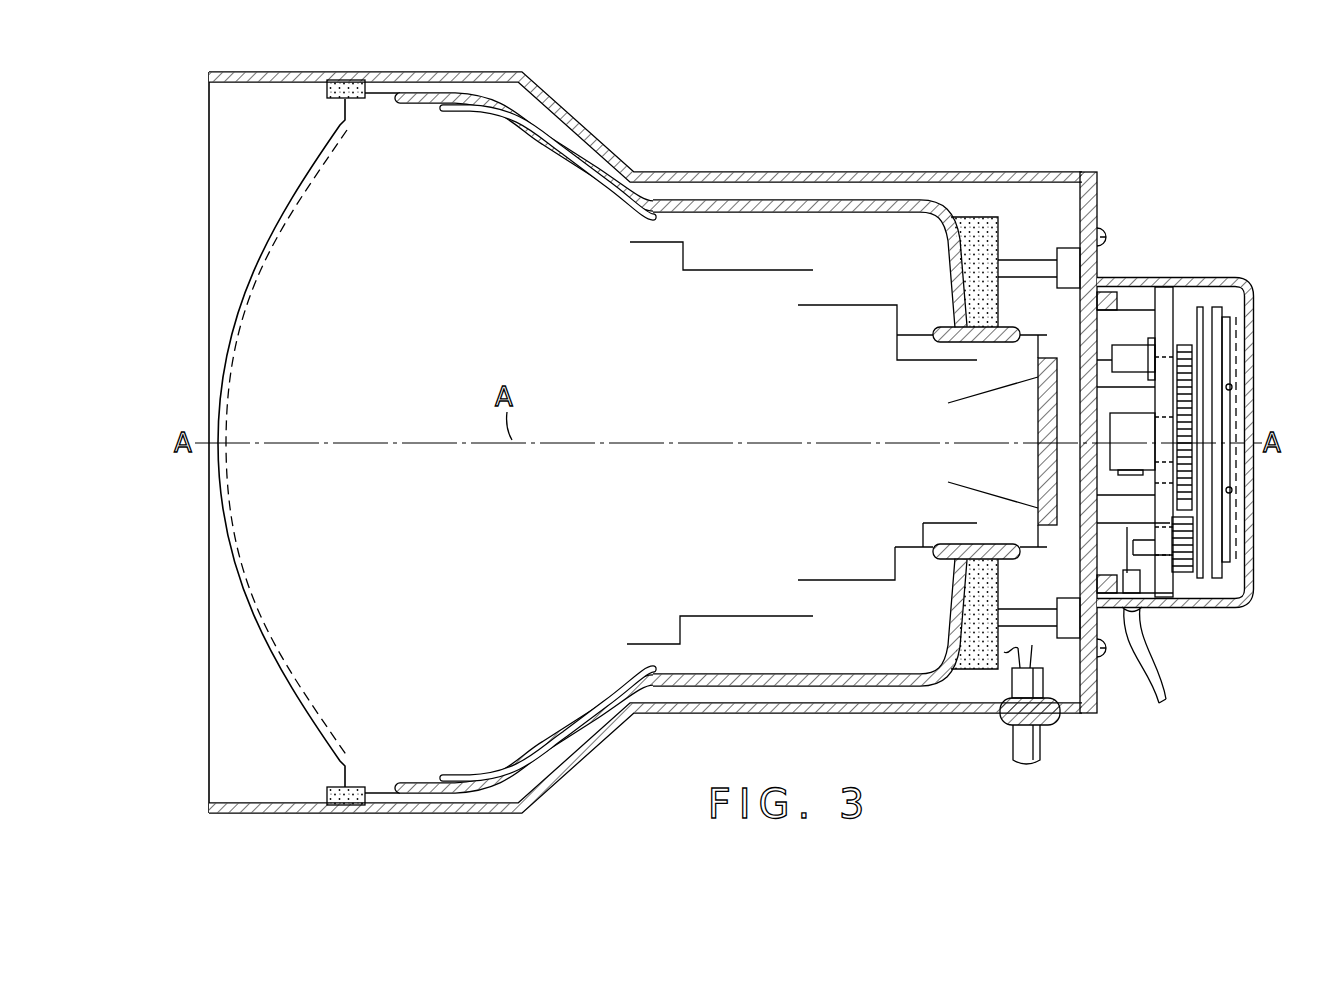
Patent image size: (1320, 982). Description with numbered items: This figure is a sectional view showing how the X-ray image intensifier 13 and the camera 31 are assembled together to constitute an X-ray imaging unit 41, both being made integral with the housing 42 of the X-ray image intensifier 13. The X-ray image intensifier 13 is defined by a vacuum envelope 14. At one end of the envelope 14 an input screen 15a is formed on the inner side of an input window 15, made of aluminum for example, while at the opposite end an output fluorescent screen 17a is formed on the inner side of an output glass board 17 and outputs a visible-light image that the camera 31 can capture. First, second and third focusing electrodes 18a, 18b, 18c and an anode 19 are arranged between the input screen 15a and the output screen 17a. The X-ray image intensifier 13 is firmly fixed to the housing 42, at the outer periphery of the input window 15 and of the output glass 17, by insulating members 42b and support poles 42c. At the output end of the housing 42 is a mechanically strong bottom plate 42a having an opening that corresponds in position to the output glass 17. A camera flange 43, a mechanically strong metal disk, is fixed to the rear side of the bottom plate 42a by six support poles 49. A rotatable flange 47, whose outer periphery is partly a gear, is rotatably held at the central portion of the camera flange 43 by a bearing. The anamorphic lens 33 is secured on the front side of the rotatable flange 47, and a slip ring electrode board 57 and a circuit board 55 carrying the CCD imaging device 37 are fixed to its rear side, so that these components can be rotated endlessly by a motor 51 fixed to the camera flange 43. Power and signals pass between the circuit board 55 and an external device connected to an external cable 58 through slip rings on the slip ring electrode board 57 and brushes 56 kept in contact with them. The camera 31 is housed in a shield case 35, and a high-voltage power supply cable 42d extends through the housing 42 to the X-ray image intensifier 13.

The X-ray image intensifier 13 is at (592, 167).
The vacuum envelope 14 is at (692, 198).
The input window 15 is at (270, 223).
The input screen 15a is at (238, 322).
The output glass board 17 is at (1047, 527).
The output fluorescent screen 17a is at (1038, 412).
The first focusing electrode 18a is at (562, 712).
The second focusing electrode 18b is at (747, 612).
The third focusing electrode 18c is at (862, 575).
The anode 19 is at (1005, 493).
The camera 31 is at (1195, 277).
The anamorphic lens 33 is at (1125, 415).
The shield case 35 is at (1248, 600).
The CCD imaging device 37 is at (1210, 425).
The X-ray imaging unit 41 is at (691, 442).
The housing 42 is at (876, 172).
The bottom plate 42a is at (1097, 205).
The insulating members 42b is at (975, 225).
The support poles 42c is at (1027, 268).
The high-voltage power supply cable 42d is at (1040, 745).
The camera flange 43 is at (1238, 282).
The rotatable flange 47 is at (1190, 380).
The support poles 49 is at (1145, 300).
The motor 51 is at (1115, 355).
The circuit board 55 is at (1222, 525).
The brushes 56 is at (1183, 575).
The slip ring electrode board 57 is at (1200, 315).
The external cable 58 is at (1147, 697).